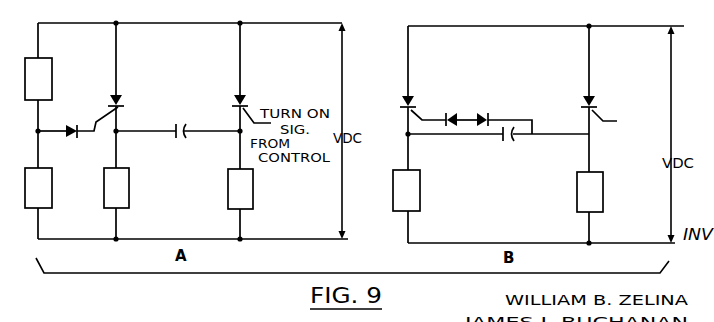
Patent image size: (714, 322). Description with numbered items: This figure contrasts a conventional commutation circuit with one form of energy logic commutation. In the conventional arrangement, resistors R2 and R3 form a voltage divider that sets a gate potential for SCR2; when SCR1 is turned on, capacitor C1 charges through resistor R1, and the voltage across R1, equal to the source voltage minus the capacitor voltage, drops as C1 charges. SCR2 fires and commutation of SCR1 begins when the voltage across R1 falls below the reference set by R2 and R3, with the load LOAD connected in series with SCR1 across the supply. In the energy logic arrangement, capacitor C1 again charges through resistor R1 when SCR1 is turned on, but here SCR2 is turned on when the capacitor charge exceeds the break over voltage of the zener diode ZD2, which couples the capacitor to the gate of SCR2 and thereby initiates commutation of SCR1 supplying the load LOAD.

The resistor R1 is at (262, 189).
The resistor R2 is at (38, 188).
The resistor R3 is at (38, 79).
The silicon controlled rectifier SCR1 is at (434, 99).
The silicon controlled rectifier SCR2 is at (283, 97).
The capacitor C1 is at (344, 148).
The zener diode ZD2 is at (489, 112).
The load LOAD is at (439, 190).